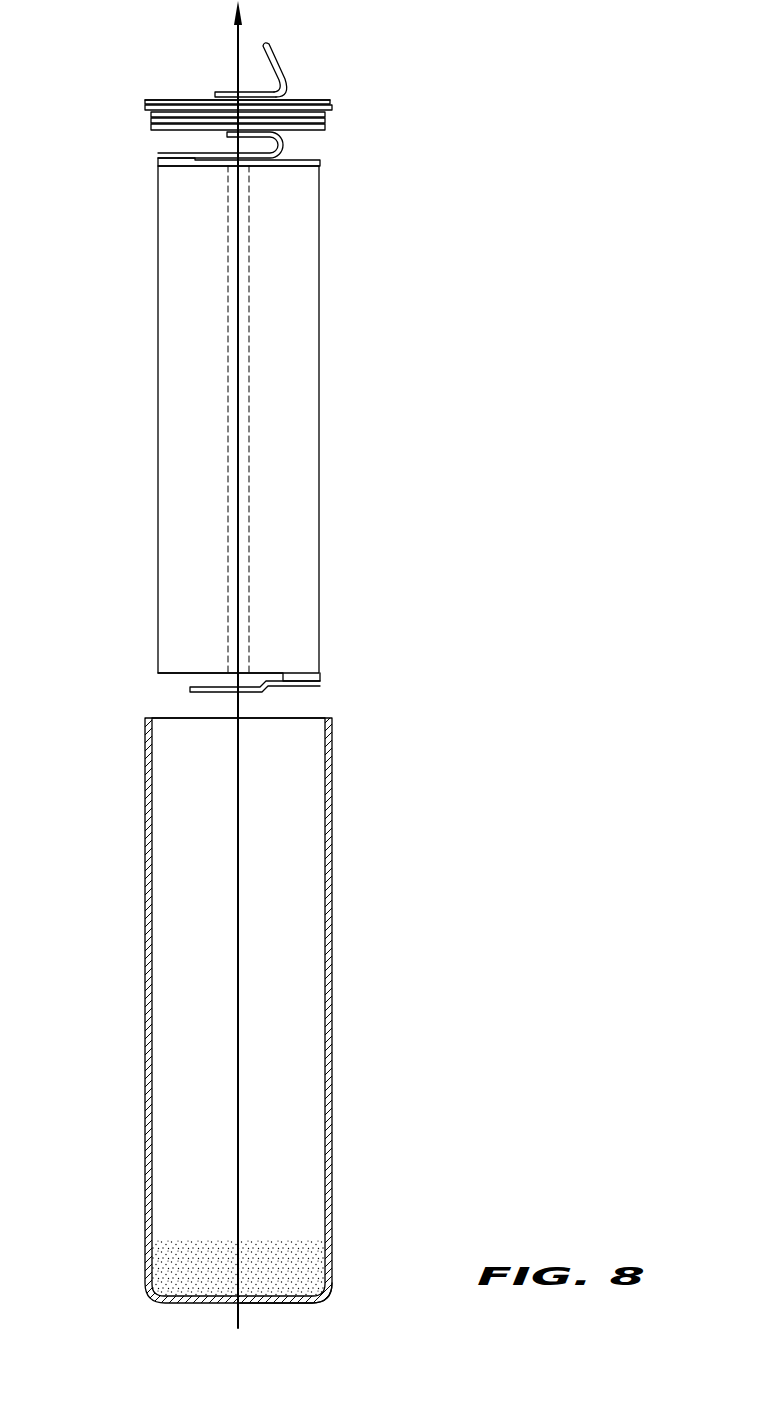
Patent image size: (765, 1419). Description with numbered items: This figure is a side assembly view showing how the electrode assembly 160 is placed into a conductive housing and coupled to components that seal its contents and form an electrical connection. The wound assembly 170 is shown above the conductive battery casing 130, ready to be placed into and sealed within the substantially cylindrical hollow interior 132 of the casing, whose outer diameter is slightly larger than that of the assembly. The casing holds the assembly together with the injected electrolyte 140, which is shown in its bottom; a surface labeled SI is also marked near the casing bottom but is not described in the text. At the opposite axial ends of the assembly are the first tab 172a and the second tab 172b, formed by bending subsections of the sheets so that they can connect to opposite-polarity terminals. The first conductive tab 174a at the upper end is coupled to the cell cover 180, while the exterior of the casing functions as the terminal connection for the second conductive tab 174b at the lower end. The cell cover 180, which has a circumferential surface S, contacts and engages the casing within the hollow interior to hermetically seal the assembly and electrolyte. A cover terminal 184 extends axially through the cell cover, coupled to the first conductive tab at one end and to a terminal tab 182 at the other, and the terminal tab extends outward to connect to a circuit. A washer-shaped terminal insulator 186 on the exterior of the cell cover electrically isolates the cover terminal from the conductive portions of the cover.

The conductive battery casing 130 is at (281, 1026).
The hollow interior 132 is at (307, 1158).
The electrolyte 140 is at (303, 1279).
The electrode assembly 160 is at (302, 419).
The assembly 170 is at (307, 425).
The first tab 172a is at (177, 162).
The second tab 172b is at (303, 677).
The first conductive tab 174a is at (285, 145).
The second conductive tab 174b is at (187, 688).
The cell cover 180 is at (330, 110).
The terminal tab 182 is at (273, 58).
The cover terminal 184 is at (233, 95).
The terminal insulator 186 is at (310, 100).
The circumferential surface S is at (124, 115).
The inner bottom surface SI is at (297, 1301).